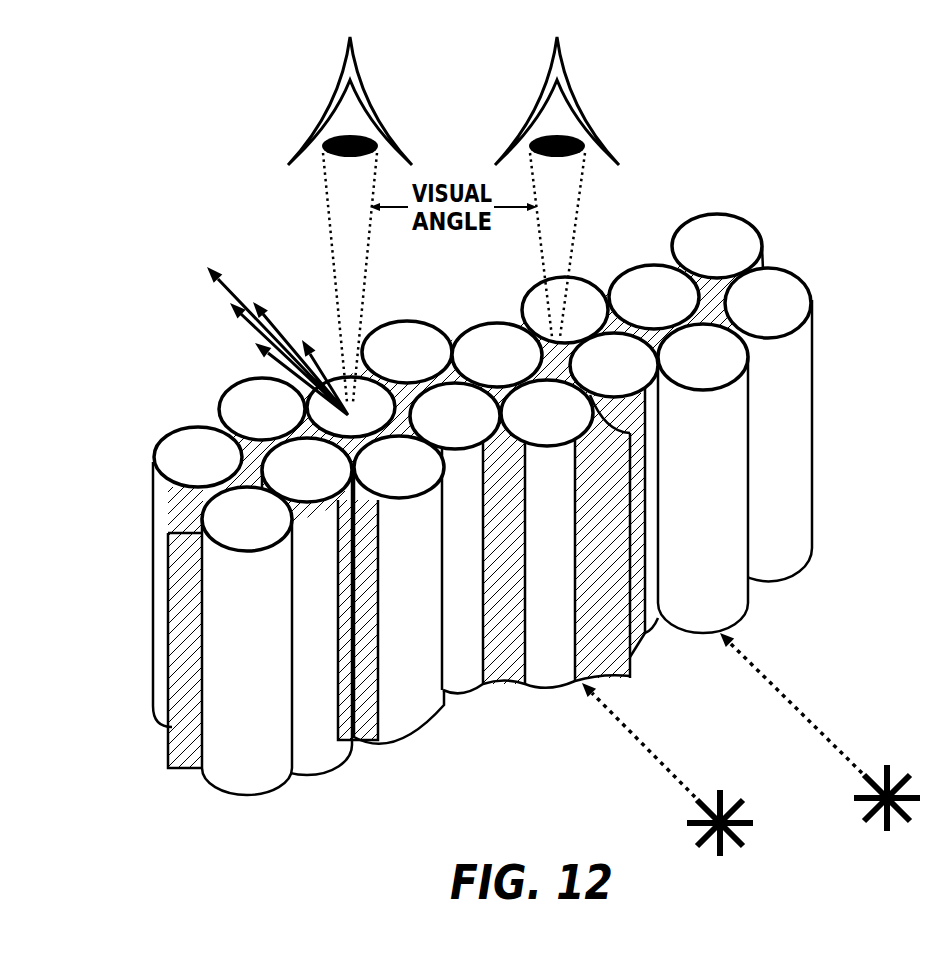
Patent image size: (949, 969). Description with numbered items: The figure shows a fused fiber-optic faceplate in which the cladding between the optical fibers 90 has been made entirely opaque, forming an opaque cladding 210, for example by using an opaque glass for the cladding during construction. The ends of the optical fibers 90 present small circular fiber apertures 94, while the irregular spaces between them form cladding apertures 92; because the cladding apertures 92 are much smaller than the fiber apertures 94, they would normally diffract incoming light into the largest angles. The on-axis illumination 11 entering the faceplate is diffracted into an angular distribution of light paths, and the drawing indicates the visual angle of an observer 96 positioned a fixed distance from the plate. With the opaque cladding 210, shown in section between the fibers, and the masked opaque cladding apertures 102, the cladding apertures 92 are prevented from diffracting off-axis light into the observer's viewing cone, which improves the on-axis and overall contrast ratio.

The optical fibers 90 is at (480, 493).
The cladding apertures 92 is at (239, 432).
The fiber apertures 94 is at (212, 507).
The observer 96 is at (340, 85).
The opaque cladding apertures 102 is at (737, 276).
The opaque cladding 210 is at (173, 743).
The on-axis illumination 11 is at (860, 796).